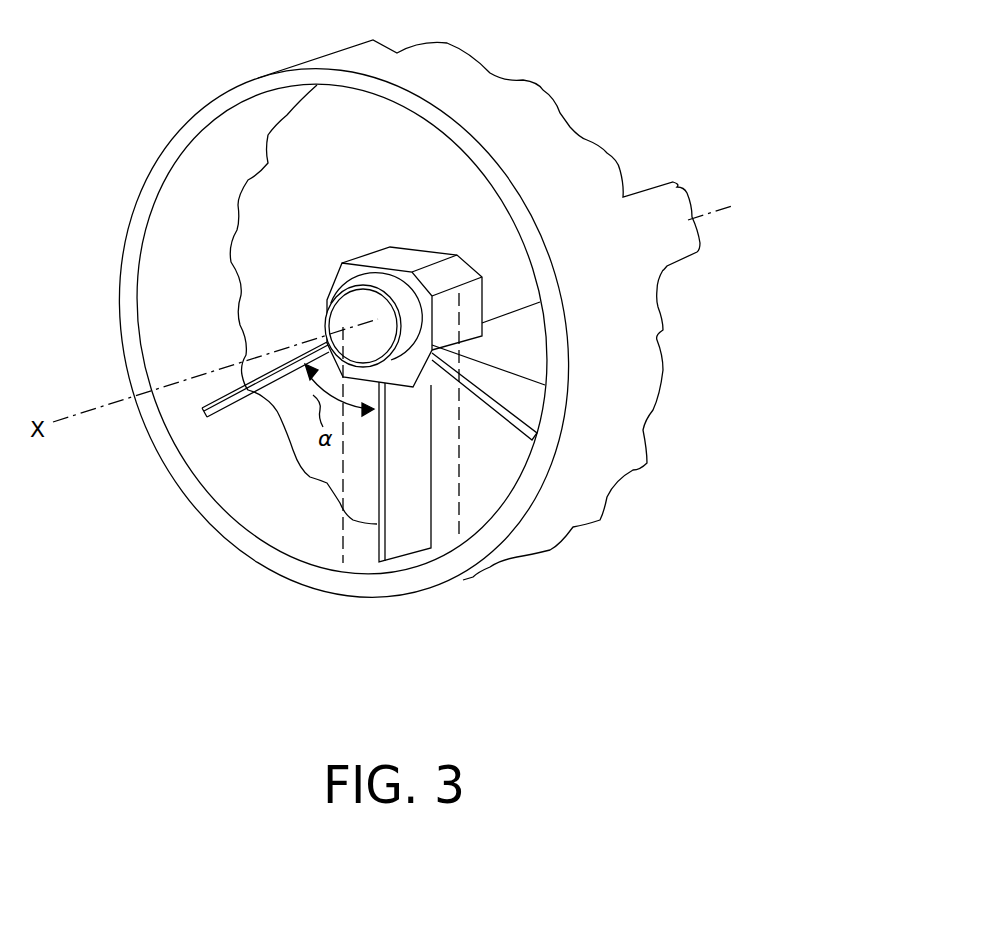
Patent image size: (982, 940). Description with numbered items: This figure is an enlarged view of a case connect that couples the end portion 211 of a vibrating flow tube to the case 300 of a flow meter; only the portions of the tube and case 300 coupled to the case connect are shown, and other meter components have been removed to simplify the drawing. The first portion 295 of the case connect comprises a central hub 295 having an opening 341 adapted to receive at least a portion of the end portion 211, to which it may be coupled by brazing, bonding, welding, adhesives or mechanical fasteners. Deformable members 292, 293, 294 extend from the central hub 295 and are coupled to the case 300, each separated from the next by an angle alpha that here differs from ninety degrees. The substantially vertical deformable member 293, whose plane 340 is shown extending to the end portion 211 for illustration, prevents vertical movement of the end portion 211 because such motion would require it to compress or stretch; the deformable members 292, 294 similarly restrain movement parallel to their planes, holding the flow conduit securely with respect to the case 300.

The case 300 is at (553, 137).
The plane 340 is at (350, 553).
The opening 341 is at (433, 338).
The first portion 295 is at (387, 257).
The end portion 211 is at (490, 257).
The deformable member 293 is at (422, 500).
The deformable member 292 is at (515, 402).
The deformable member 294 is at (250, 400).